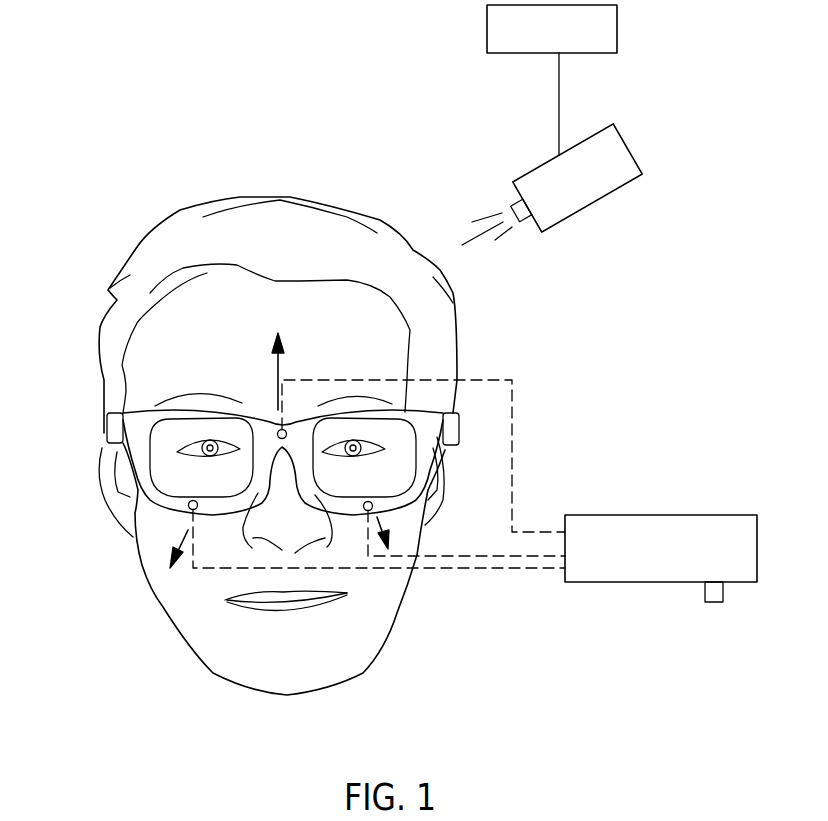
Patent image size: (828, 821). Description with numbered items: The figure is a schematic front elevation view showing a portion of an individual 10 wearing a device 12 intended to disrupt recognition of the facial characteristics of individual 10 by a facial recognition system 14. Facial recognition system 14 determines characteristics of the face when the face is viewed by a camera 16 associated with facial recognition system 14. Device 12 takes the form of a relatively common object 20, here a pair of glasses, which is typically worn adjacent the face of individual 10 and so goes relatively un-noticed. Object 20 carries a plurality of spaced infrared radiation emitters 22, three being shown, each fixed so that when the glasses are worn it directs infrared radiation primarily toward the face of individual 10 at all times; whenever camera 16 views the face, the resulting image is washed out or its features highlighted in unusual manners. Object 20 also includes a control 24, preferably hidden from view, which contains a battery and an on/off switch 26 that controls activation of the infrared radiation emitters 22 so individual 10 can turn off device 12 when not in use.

The individual 10 is at (87, 290).
The device 12 is at (138, 497).
The facial recognition system 14 is at (487, 30).
The camera 16 is at (627, 143).
The common object 20 is at (106, 414).
The infrared radiation emitter 22 is at (278, 432).
The control 24 is at (632, 515).
The on/off switch 26 is at (712, 603).